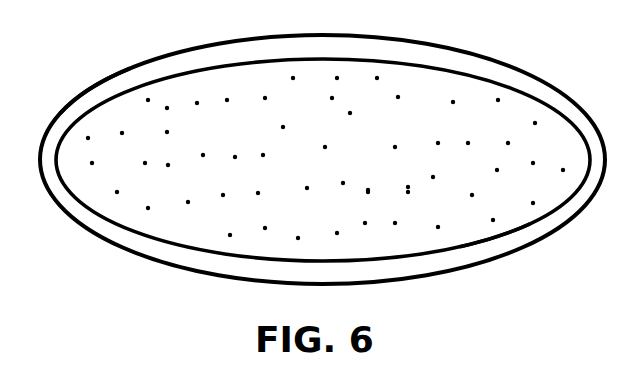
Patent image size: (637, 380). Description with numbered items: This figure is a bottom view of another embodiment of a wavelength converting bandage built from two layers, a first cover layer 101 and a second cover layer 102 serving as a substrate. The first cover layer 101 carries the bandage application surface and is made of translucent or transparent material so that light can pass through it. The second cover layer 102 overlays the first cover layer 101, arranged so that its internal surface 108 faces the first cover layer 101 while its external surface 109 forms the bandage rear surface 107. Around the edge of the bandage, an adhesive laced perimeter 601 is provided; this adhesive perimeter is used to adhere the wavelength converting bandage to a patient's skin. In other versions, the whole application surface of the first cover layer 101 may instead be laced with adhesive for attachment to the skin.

The first cover layer 101 is at (125, 235).
The second cover layer 102 is at (415, 233).
The bandage rear surface 107 is at (465, 49).
The internal surface 108 is at (205, 225).
The external surface 109 is at (82, 93).
The adhesive laced perimeter 601 is at (493, 252).